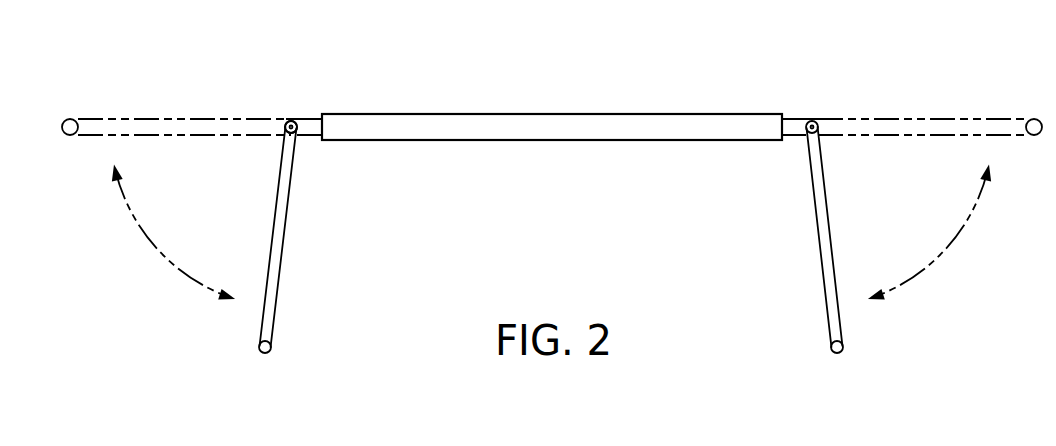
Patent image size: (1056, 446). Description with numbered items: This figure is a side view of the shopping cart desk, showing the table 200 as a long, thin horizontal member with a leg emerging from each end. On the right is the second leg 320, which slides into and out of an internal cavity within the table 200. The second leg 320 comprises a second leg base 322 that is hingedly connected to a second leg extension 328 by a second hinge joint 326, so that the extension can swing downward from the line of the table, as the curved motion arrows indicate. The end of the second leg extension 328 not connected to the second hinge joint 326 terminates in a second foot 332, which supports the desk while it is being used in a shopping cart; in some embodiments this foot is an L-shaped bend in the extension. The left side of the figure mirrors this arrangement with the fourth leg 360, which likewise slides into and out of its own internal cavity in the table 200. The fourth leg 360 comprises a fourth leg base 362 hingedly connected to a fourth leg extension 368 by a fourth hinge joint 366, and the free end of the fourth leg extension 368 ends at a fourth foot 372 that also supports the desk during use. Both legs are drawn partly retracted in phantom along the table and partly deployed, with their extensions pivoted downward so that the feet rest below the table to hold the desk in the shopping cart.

The table 200 is at (680, 114).
The second leg 320 is at (836, 88).
The second leg base 322 is at (792, 140).
The second hinge joint 326 is at (820, 123).
The second leg extension 328 is at (824, 226).
The second foot 332 is at (843, 344).
The fourth leg 360 is at (323, 88).
The fourth leg base 362 is at (308, 131).
The fourth hinge joint 366 is at (295, 136).
The fourth leg extension 368 is at (273, 297).
The fourth foot 372 is at (271, 350).